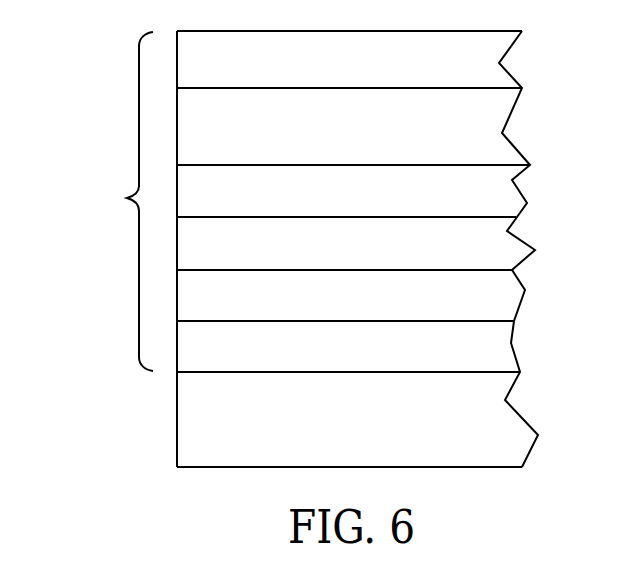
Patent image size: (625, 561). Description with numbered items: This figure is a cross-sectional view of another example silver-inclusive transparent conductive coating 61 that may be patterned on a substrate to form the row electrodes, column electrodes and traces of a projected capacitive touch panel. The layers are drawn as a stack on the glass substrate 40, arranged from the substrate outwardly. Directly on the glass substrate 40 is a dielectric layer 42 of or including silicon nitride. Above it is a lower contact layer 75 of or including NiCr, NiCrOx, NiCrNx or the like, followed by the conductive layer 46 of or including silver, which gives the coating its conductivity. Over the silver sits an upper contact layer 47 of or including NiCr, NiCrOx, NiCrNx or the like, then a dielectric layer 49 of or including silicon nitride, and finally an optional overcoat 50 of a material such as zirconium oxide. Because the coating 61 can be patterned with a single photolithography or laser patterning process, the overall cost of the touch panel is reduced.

The silver-inclusive transparent conductive coating 61 is at (122, 196).
The optional overcoat 50 is at (481, 66).
The dielectric layer 49 is at (485, 125).
The upper contact layer 47 is at (498, 193).
The conductive layer 46 is at (503, 243).
The lower contact layer 75 is at (507, 297).
The dielectric layer 42 is at (503, 343).
The glass substrate 40 is at (500, 425).